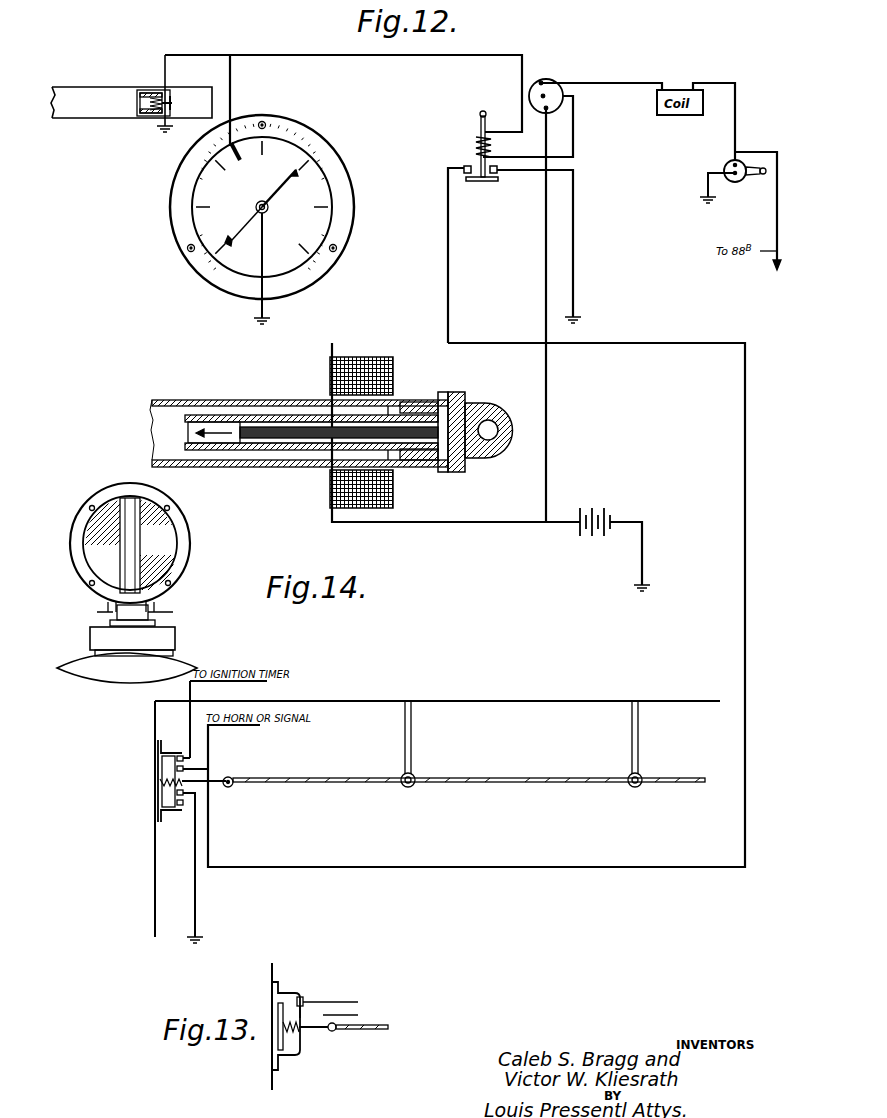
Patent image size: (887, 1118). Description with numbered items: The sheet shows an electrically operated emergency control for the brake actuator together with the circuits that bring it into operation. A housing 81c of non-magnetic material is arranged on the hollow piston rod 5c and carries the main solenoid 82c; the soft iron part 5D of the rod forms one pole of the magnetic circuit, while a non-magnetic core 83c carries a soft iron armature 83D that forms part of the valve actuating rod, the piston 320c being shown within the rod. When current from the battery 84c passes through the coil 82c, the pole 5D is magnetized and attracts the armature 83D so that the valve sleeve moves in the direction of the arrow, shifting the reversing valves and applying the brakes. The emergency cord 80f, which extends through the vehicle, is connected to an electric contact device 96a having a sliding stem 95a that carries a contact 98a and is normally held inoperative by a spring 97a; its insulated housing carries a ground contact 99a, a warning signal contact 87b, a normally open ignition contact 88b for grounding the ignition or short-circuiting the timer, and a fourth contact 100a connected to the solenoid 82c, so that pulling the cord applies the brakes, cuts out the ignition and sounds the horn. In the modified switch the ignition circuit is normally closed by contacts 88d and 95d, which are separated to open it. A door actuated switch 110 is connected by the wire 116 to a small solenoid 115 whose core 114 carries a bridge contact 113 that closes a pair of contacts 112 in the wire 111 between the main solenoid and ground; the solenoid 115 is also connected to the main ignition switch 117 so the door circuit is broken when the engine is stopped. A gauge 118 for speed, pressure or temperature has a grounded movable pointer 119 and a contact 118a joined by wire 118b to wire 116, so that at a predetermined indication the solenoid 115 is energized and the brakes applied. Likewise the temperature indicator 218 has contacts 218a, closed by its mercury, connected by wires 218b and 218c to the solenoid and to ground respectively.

In FIG. 12, the door actuated switch 110 is at (137, 104).
In FIG. 12, the wire 111 is at (448, 282).
In FIG. 12, the contacts 112 is at (464, 168).
In FIG. 12, the bridge contact 113 is at (480, 193).
In FIG. 12, the core 114 is at (491, 113).
In FIG. 12, the solenoid 115 is at (476, 140).
In FIG. 12, the wire 116 is at (443, 56).
In FIG. 12, the main ignition switch 117 is at (552, 82).
In FIG. 12, the gauge 118 is at (322, 148).
In FIG. 12, the contact 118a is at (230, 149).
In FIG. 12, the wire 118b is at (232, 96).
In FIG. 12, the movable pointer 119 is at (245, 234).
In FIG. 14, the pole 5D is at (397, 397).
In FIG. 14, the hollow piston rod 5c is at (237, 459).
In FIG. 14, the piston 320c is at (190, 448).
In FIG. 14, the core 83c is at (313, 451).
In FIG. 14, the armature 83D is at (438, 407).
In FIG. 14, the housing 81c is at (435, 392).
In FIG. 14, the solenoid 82c is at (393, 500).
In FIG. 14, the battery 84c is at (597, 537).
In FIG. 14, the temperature indicator 218 is at (140, 556).
In FIG. 14, the contacts 218a is at (130, 525).
In FIG. 14, the wire 218b is at (163, 608).
In FIG. 14, the wire 218c is at (112, 610).
In FIG. 14, the ignition contact 88b is at (188, 748).
In FIG. 14, the warning signal contact 87b is at (190, 768).
In FIG. 14, the contact 98a is at (160, 777).
In FIG. 14, the spring 97a is at (172, 786).
In FIG. 14, the electric contact device 96a is at (177, 818).
In FIG. 14, the sliding stem 95a is at (224, 790).
In FIG. 14, the fourth contact 100a is at (195, 794).
In FIG. 14, the ground contact 99a is at (190, 804).
In FIG. 14, the emergency cord 80f is at (514, 769).
In FIG. 13, the emergency cord 80f is at (382, 1026).
In FIG. 13, the contact 88d is at (298, 993).
In FIG. 13, the contact 95d is at (315, 1031).